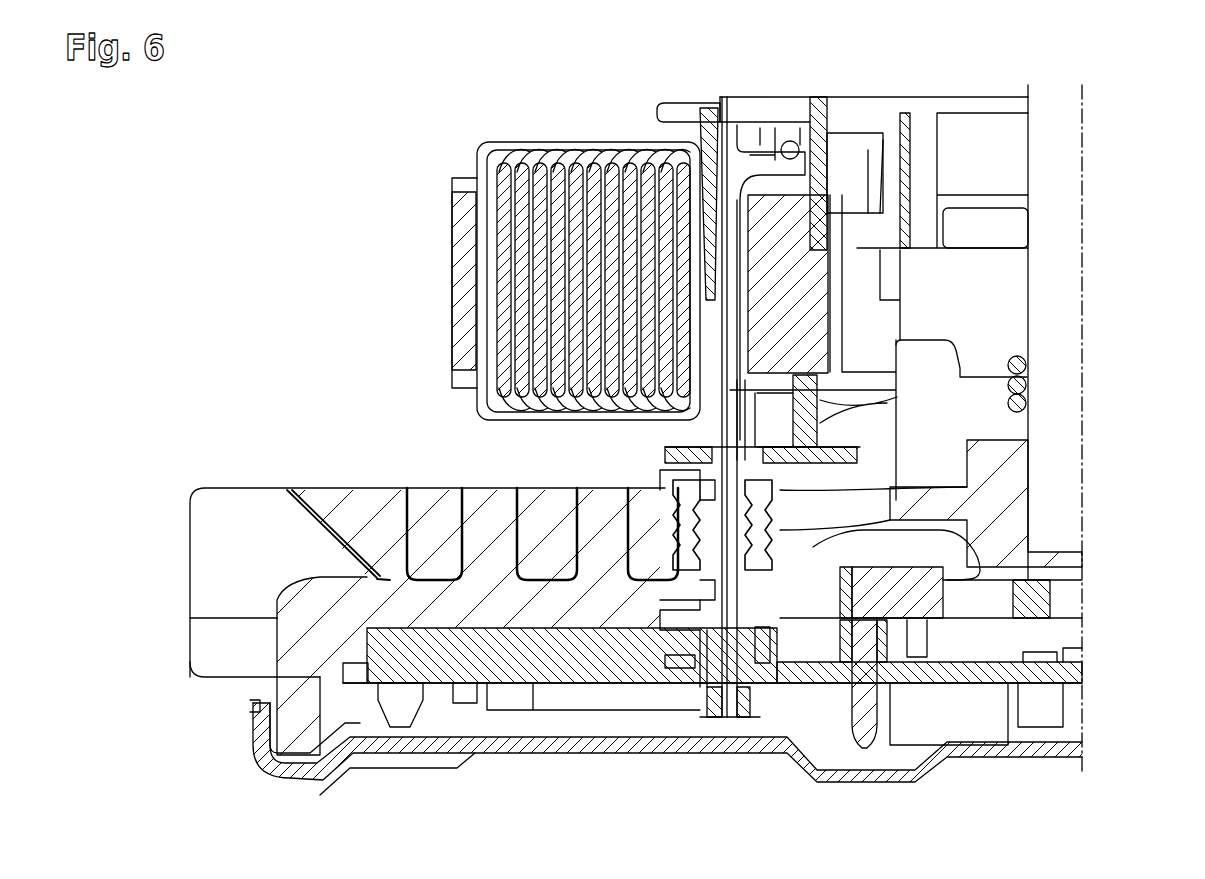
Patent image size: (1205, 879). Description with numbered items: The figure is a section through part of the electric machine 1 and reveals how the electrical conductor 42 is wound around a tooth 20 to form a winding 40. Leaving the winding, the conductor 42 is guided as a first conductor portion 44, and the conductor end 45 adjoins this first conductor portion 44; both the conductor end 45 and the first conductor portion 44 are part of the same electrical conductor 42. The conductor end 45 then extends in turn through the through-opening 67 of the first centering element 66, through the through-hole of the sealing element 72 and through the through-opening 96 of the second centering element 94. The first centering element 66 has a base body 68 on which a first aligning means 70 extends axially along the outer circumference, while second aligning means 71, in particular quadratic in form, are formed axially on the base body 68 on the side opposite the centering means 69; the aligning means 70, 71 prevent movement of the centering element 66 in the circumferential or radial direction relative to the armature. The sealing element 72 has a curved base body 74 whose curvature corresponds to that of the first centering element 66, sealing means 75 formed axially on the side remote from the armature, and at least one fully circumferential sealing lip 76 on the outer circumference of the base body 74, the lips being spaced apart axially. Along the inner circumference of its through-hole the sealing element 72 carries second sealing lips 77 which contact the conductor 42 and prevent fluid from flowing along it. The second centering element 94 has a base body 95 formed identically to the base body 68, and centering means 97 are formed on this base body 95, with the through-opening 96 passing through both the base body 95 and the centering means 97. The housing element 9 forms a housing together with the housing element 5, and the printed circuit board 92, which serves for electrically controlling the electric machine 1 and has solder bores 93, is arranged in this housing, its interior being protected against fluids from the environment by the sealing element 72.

The electric machine 1 is at (232, 234).
The housing element 5 is at (428, 500).
The housing element 9 is at (253, 740).
The tooth 20 is at (445, 214).
The winding 40 is at (524, 138).
The electrical conductor 42 is at (617, 160).
The first conductor portion 44 is at (706, 108).
The conductor end 45 is at (780, 603).
The first centering element 66 is at (658, 448).
The through-opening 67 is at (658, 522).
The base body 68 is at (827, 457).
The centering means 69 is at (780, 633).
The first aligning means 70 is at (820, 382).
The second aligning means 71 is at (777, 417).
The sealing element 72 is at (660, 525).
The base body 74 is at (890, 520).
The sealing means 75 is at (990, 688).
The sealing lip 76 is at (860, 685).
The second sealing lip 77 is at (660, 604).
The printed circuit board 92 is at (310, 677).
The solder bore 93 is at (731, 690).
The second centering element 94 is at (830, 690).
The base body 95 is at (643, 640).
The through-opening 96 is at (765, 680).
The centering means 97 is at (690, 650).